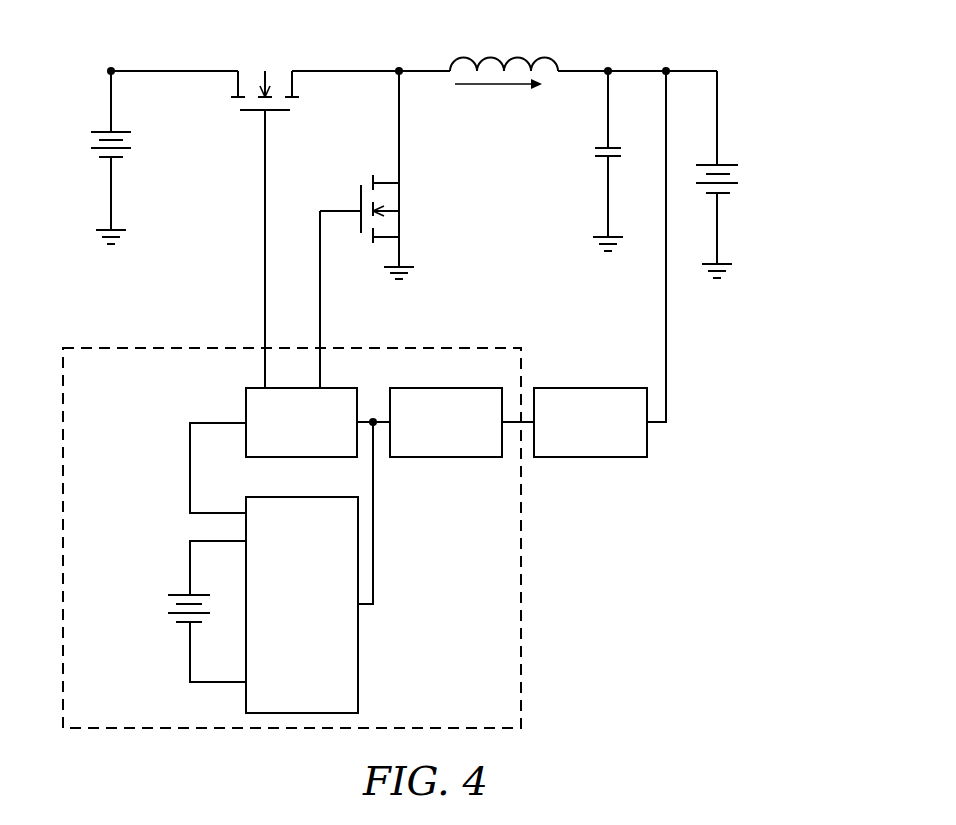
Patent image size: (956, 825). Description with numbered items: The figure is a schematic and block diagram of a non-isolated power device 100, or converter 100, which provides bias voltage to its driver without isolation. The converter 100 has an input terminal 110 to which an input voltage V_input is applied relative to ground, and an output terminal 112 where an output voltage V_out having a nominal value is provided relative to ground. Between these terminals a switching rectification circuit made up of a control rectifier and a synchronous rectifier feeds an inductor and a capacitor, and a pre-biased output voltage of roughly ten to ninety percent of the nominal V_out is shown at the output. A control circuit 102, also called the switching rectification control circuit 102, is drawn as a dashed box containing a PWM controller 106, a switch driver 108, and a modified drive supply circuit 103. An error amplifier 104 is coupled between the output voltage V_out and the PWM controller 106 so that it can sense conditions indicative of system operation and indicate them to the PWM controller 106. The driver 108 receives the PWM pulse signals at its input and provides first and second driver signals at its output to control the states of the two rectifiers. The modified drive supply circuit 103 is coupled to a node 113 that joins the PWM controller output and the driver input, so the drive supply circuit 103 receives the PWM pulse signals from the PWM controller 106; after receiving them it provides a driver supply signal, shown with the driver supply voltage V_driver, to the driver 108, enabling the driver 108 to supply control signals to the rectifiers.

The non-isolated power device 100 is at (104, 310).
The input terminal 110 is at (111, 71).
The output terminal 112 is at (666, 71).
The control circuit 102 is at (521, 535).
The switch driver 108 is at (245, 405).
The PWM controller 106 is at (450, 457).
The error amplifier 104 is at (590, 457).
The node 113 is at (374, 428).
The modified drive supply circuit 103 is at (345, 648).